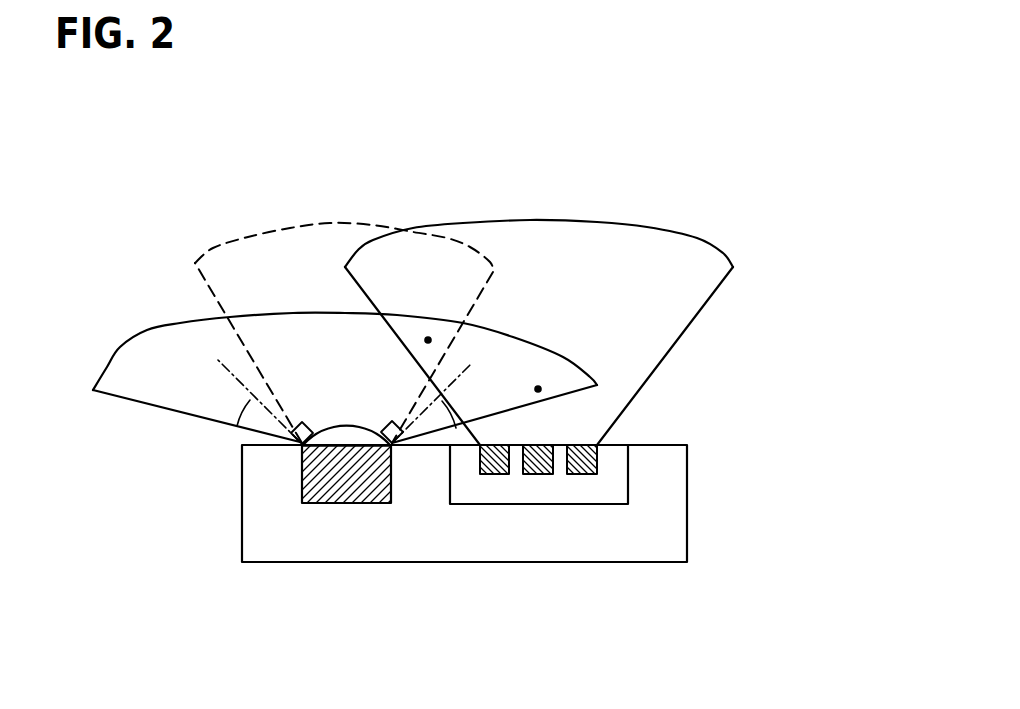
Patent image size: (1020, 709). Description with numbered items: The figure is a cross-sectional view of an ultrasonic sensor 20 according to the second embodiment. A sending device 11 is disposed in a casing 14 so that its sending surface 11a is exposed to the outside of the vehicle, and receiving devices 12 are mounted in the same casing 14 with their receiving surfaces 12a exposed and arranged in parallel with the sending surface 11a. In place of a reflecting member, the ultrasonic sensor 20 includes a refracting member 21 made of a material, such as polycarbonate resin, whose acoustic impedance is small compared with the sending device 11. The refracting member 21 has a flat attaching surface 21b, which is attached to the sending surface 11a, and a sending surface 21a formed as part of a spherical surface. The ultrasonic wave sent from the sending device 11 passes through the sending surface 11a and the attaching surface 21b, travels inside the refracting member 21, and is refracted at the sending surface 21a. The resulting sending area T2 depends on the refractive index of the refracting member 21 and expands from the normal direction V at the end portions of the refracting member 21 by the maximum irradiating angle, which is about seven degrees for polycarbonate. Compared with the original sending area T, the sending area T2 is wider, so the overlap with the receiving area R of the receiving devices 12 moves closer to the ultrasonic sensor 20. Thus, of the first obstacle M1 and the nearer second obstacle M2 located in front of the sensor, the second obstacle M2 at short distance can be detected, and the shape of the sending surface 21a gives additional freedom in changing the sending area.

The ultrasonic sensor 20 is at (632, 126).
The sending device 11 is at (365, 490).
The sending surface 11a is at (372, 450).
The receiving device 12 is at (533, 468).
The receiving surface 12a is at (537, 445).
The casing 14 is at (688, 502).
The refracting member 21 is at (355, 435).
The sending surface 21a is at (313, 431).
The attaching surface 21b is at (365, 468).
The sending area T is at (248, 235).
The sending area T2 is at (291, 313).
The receiving area R is at (648, 228).
The first obstacle M1 is at (429, 337).
The second obstacle M2 is at (538, 385).
The normal direction V is at (258, 366).